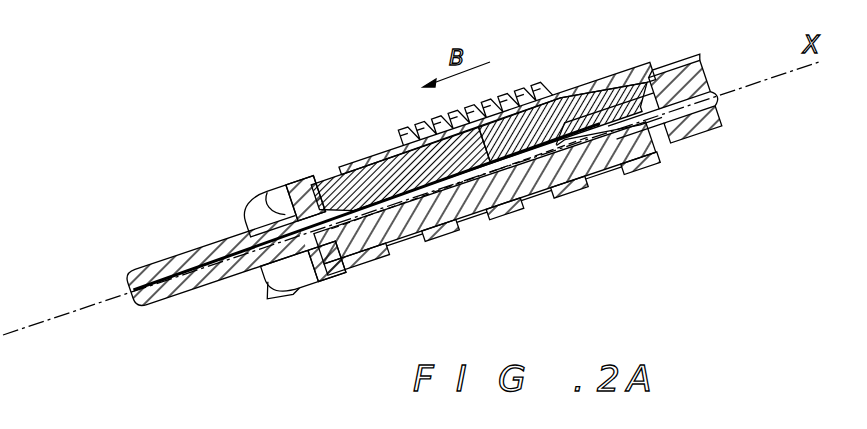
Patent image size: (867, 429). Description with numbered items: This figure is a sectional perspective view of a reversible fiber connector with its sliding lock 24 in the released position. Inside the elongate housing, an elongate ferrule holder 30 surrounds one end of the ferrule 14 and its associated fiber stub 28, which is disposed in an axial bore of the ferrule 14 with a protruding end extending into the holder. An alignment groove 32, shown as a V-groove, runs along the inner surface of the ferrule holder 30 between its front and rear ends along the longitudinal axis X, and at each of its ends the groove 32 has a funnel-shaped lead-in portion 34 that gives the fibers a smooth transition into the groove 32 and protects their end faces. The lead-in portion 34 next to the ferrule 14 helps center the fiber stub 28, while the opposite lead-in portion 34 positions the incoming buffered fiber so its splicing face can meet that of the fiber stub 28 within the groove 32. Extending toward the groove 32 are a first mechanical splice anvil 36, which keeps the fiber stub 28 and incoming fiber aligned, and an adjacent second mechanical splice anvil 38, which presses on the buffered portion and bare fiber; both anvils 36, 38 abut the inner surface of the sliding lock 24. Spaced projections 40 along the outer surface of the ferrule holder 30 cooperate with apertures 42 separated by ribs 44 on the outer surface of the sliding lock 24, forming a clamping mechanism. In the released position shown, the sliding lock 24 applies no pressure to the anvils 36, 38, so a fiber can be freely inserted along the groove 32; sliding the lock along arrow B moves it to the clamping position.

The ferrule 14 is at (158, 298).
The fiber stub 28 is at (193, 254).
The ferrule holder 30 is at (293, 188).
The funnel-shaped lead-in portion 34 is at (300, 272).
The first mechanical splice anvil 36 is at (368, 180).
The second mechanical splice anvil 38 is at (585, 96).
The sliding lock 24 is at (535, 82).
The alignment groove 32 is at (441, 238).
The apertures 42 is at (388, 241).
The projections 40 is at (538, 184).
The ribs 44 is at (654, 154).